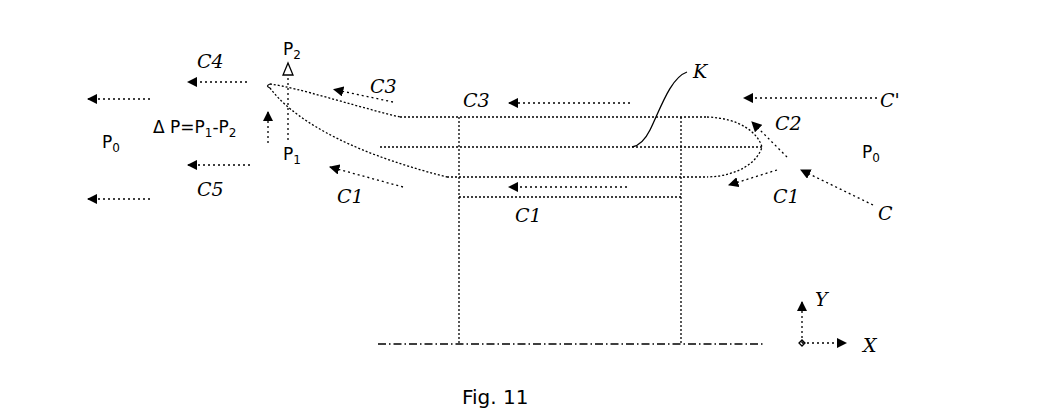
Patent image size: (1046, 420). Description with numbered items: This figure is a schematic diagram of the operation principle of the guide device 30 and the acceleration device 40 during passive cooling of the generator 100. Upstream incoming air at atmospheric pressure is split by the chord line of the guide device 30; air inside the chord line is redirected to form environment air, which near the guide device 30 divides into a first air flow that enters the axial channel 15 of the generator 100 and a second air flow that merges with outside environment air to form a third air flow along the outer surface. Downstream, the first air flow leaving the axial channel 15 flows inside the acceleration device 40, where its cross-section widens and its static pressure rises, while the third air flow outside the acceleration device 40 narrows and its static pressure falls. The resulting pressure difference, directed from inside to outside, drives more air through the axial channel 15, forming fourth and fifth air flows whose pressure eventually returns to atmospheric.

The generator 100 is at (541, 90).
The guide device 30 is at (698, 128).
The acceleration device 40 is at (395, 123).
The axial channel 15 is at (475, 190).